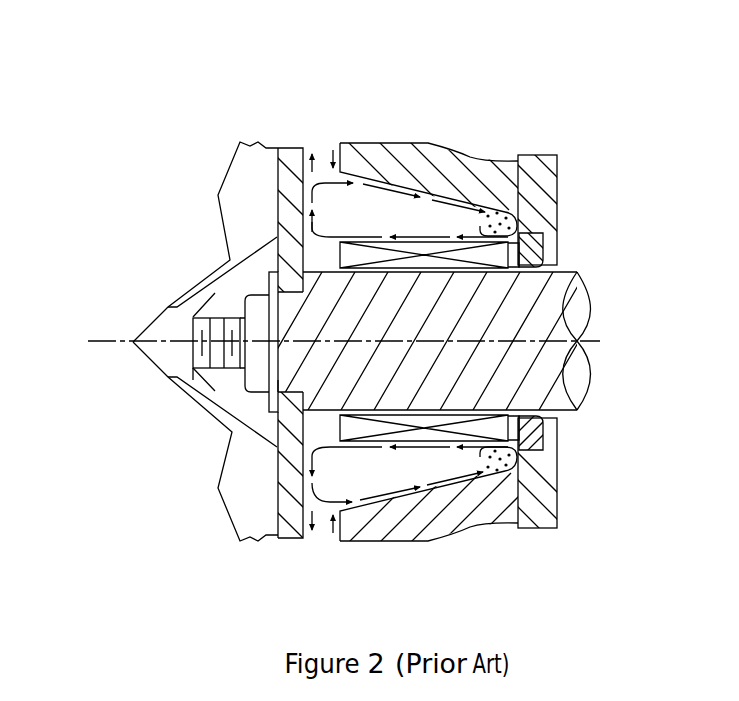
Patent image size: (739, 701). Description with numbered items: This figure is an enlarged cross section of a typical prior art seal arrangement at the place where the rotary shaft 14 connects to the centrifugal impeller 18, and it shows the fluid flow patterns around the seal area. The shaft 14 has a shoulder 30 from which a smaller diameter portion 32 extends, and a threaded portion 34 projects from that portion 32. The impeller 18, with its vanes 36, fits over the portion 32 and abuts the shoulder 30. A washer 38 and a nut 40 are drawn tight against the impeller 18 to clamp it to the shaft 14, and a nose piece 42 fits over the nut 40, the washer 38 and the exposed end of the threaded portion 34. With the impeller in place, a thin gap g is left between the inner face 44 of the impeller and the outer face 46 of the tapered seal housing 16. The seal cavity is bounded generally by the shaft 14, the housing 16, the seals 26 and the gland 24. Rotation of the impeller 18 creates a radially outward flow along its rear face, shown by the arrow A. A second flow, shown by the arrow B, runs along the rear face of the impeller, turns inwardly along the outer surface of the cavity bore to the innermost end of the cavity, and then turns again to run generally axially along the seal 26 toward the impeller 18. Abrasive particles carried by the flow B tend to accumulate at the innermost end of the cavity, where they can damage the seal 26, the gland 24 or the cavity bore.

The rotary shaft 14 is at (578, 308).
The tapered seal housing 16 is at (460, 210).
The centrifugal impeller 18 is at (293, 160).
The gland 24 is at (487, 256).
The seal 26 is at (515, 248).
The shoulder 30 is at (302, 398).
The smaller diameter portion 32 is at (273, 398).
The threaded portion 34 is at (205, 358).
The vanes 36 is at (242, 213).
The washer 38 is at (275, 287).
The nut 40 is at (253, 325).
The nose piece 42 is at (167, 335).
The inner face of the impeller 44 is at (309, 533).
The outer face of the housing 46 is at (332, 538).
The thin gap g is at (320, 530).
The radially outward flow A is at (312, 170).
The circulating flow in seal cavity B is at (394, 203).